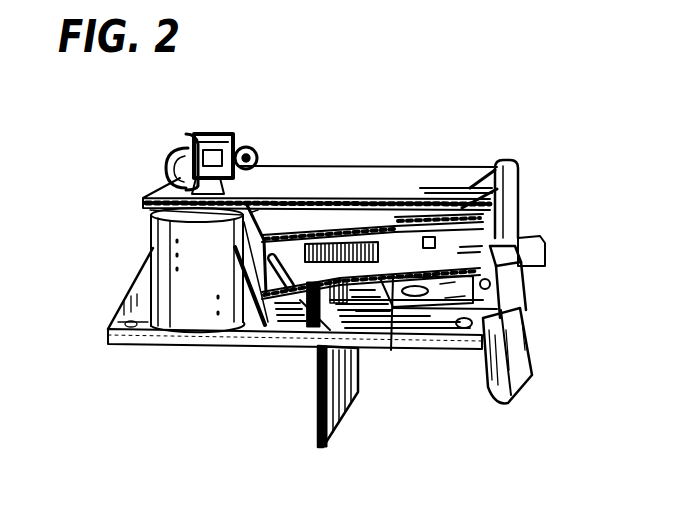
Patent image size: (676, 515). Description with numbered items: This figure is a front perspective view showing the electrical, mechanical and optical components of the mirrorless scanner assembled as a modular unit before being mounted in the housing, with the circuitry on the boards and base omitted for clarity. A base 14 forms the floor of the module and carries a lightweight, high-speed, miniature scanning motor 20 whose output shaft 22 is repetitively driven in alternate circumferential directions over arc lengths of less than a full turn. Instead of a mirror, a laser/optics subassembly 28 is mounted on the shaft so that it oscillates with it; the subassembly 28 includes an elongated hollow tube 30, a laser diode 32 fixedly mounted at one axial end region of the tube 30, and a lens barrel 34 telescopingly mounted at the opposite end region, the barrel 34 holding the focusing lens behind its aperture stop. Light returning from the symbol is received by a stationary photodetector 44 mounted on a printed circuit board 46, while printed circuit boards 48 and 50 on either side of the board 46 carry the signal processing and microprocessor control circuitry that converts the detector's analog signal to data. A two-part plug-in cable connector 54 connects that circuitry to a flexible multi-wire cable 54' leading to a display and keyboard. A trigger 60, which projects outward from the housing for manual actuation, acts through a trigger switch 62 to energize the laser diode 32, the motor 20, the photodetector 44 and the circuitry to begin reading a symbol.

The base 14 is at (108, 326).
The scanning motor 20 is at (165, 250).
The output shaft 22 is at (206, 216).
The laser/optics subassembly 28 is at (235, 134).
The elongated hollow tube 30 is at (221, 134).
The laser diode 32 is at (196, 134).
The lens barrel 34 is at (258, 154).
The photodetector 44 is at (452, 232).
The printed circuit board 46 is at (341, 249).
The printed circuit board 48 is at (355, 180).
The printed circuit board 50 is at (371, 277).
The plug-in cable connector 54 is at (410, 274).
The flexible multi-wire cable 54' is at (305, 396).
The trigger 60 is at (520, 347).
The trigger switch 62 is at (393, 350).